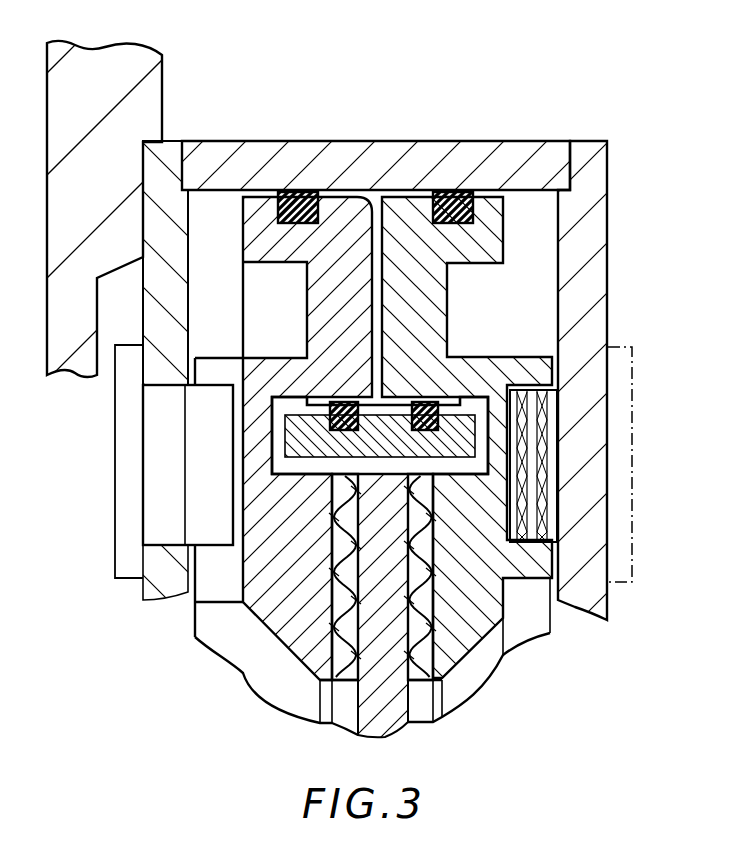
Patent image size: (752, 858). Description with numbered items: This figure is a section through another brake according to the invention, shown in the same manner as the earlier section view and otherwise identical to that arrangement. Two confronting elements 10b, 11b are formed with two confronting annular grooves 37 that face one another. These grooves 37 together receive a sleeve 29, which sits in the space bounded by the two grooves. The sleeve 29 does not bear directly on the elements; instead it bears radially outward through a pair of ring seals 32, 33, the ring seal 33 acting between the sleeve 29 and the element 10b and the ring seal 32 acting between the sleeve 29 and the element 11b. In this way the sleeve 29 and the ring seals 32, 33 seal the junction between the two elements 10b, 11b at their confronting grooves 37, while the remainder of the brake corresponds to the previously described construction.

The element 10b is at (256, 208).
The element 11b is at (493, 213).
The annular grooves 37 is at (365, 400).
The ring seal 33 is at (330, 400).
The ring seal 32 is at (425, 400).
The sleeve 29 is at (457, 438).